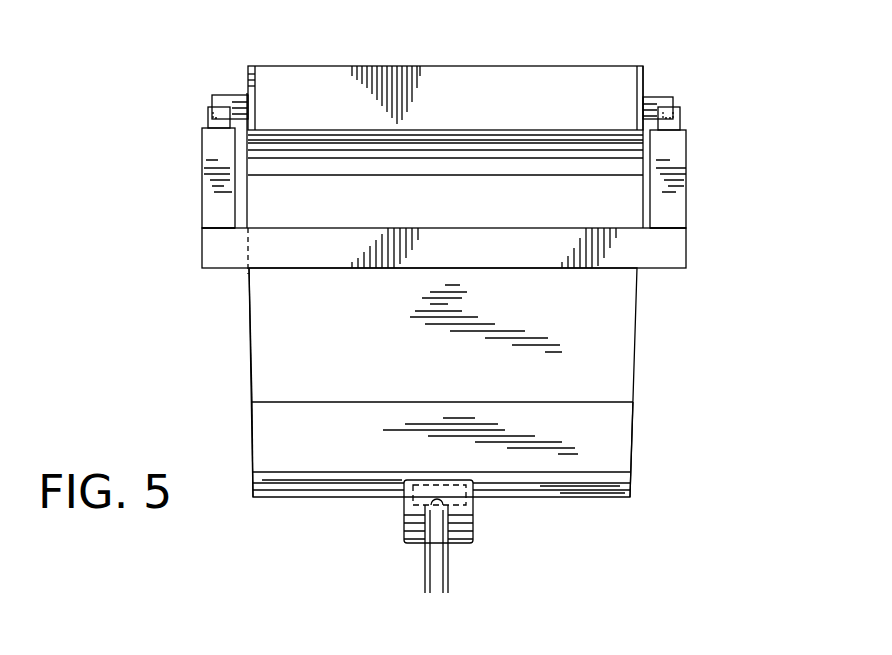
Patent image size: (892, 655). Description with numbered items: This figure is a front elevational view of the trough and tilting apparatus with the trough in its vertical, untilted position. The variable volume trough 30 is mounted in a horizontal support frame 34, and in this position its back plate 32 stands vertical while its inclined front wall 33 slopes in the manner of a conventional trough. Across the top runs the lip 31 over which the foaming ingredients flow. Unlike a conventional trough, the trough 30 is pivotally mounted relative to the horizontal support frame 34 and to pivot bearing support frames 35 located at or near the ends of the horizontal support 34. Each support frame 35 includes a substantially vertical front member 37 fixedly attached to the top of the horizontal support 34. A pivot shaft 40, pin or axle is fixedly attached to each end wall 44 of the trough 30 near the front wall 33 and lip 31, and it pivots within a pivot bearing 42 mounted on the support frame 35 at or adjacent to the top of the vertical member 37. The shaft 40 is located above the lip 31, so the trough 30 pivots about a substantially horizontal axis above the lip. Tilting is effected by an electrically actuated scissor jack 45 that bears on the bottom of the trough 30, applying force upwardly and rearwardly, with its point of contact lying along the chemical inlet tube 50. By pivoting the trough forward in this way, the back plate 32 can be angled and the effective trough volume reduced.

The variable volume trough 30 is at (620, 330).
The lip 31 is at (530, 130).
The back plate 32 is at (434, 76).
The inclined front wall 33 is at (257, 325).
The horizontal support frame 34 is at (224, 252).
The pivot bearing support frame 35 is at (203, 145).
The vertical front member 37 is at (202, 203).
The pivot shaft 40 is at (232, 95).
The pivot bearing 42 is at (207, 110).
The end wall 44 is at (251, 356).
The electrically actuated scissor jack 45 is at (466, 523).
The chemical inlet tube 50 is at (313, 486).